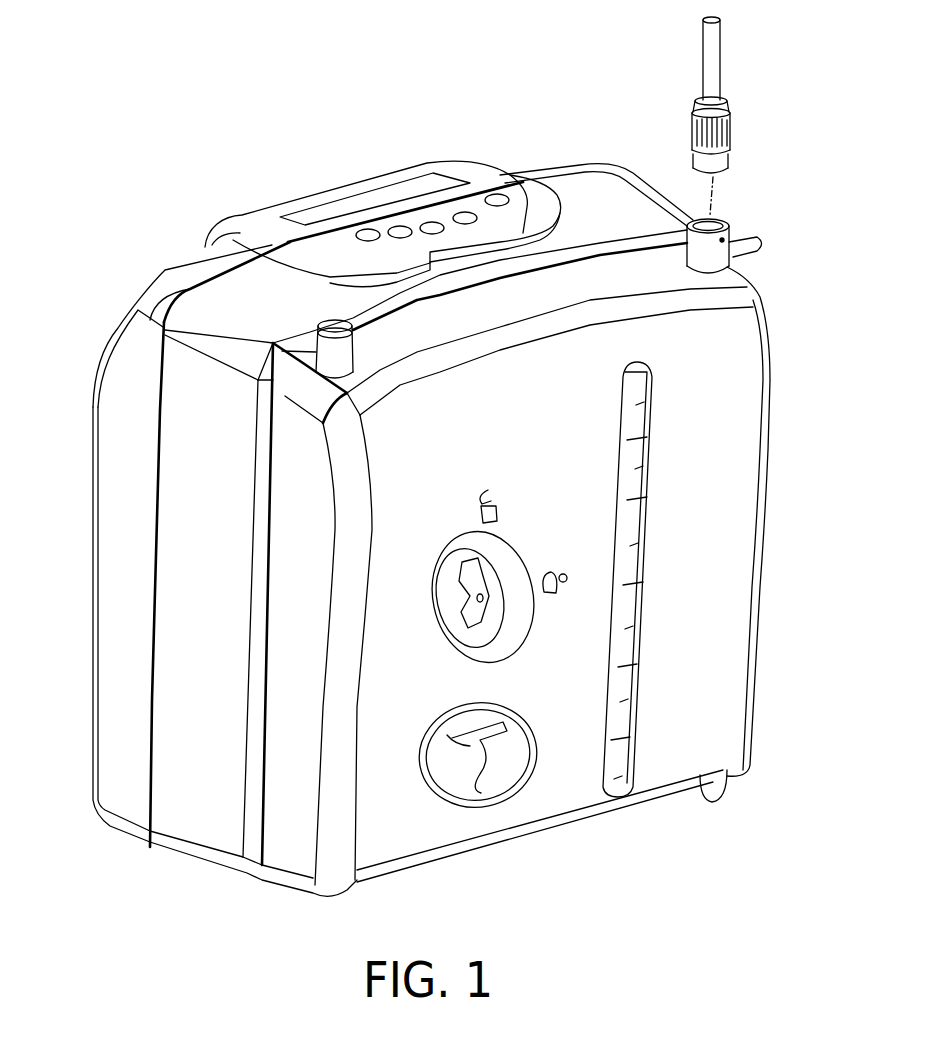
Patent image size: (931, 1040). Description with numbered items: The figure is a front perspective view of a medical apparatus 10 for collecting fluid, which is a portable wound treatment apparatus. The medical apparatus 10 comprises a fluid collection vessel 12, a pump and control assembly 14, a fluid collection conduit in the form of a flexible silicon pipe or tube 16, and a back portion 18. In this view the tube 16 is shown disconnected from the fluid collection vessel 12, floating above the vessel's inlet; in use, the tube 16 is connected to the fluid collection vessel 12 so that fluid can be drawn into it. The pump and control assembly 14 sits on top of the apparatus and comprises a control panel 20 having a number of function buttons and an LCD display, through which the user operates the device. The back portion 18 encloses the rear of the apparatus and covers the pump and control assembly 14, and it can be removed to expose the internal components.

The medical apparatus 10 is at (152, 181).
The fluid collection vessel 12 is at (772, 459).
The pump and control assembly 14 is at (178, 595).
The tube 16 is at (720, 43).
The back portion 18 is at (129, 384).
The control panel 20 is at (470, 181).